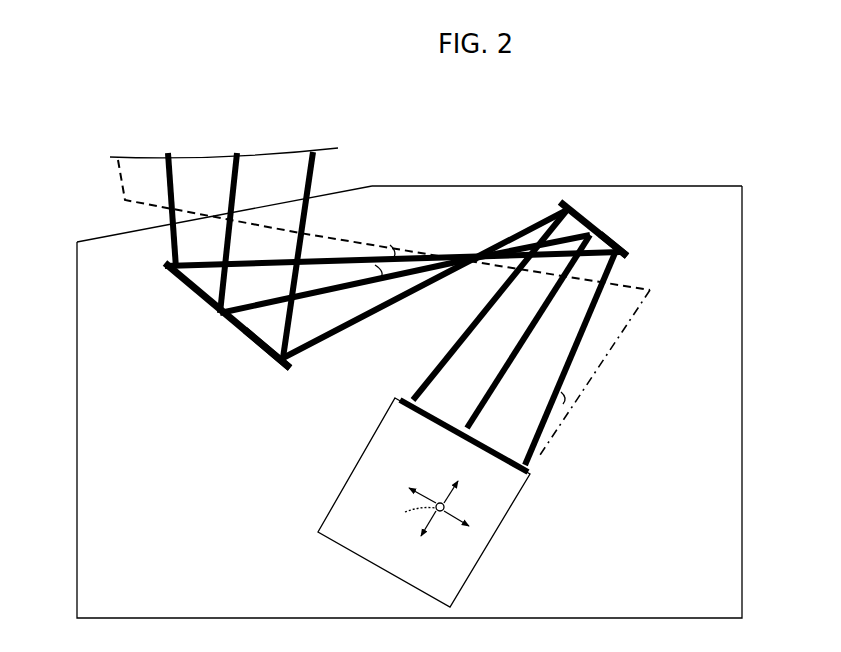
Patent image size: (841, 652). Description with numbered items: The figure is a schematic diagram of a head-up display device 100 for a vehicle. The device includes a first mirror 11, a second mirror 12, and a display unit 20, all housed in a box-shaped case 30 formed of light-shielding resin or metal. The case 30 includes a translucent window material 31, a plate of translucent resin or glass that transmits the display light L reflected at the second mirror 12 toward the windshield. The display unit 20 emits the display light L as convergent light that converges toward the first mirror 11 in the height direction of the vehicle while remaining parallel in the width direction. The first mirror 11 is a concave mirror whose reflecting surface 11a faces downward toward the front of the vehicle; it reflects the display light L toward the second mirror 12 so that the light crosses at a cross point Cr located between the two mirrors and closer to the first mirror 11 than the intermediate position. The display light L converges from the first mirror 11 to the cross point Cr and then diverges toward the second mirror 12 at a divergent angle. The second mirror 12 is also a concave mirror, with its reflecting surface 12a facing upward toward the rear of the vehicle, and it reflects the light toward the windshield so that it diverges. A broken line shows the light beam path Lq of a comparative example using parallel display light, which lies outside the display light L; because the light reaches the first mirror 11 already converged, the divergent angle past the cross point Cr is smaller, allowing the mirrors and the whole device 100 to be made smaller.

The head-up display device 100 is at (409, 402).
The case 30 is at (693, 186).
The translucent window material 31 is at (110, 236).
The first mirror 11 is at (587, 215).
The reflecting surface 11a is at (626, 259).
The second mirror 12 is at (207, 302).
The reflecting surface 12a is at (291, 366).
The display unit 20 is at (424, 502).
The display light L is at (421, 291).
The cross point Cr is at (473, 253).
The light beam path Lq is at (612, 352).